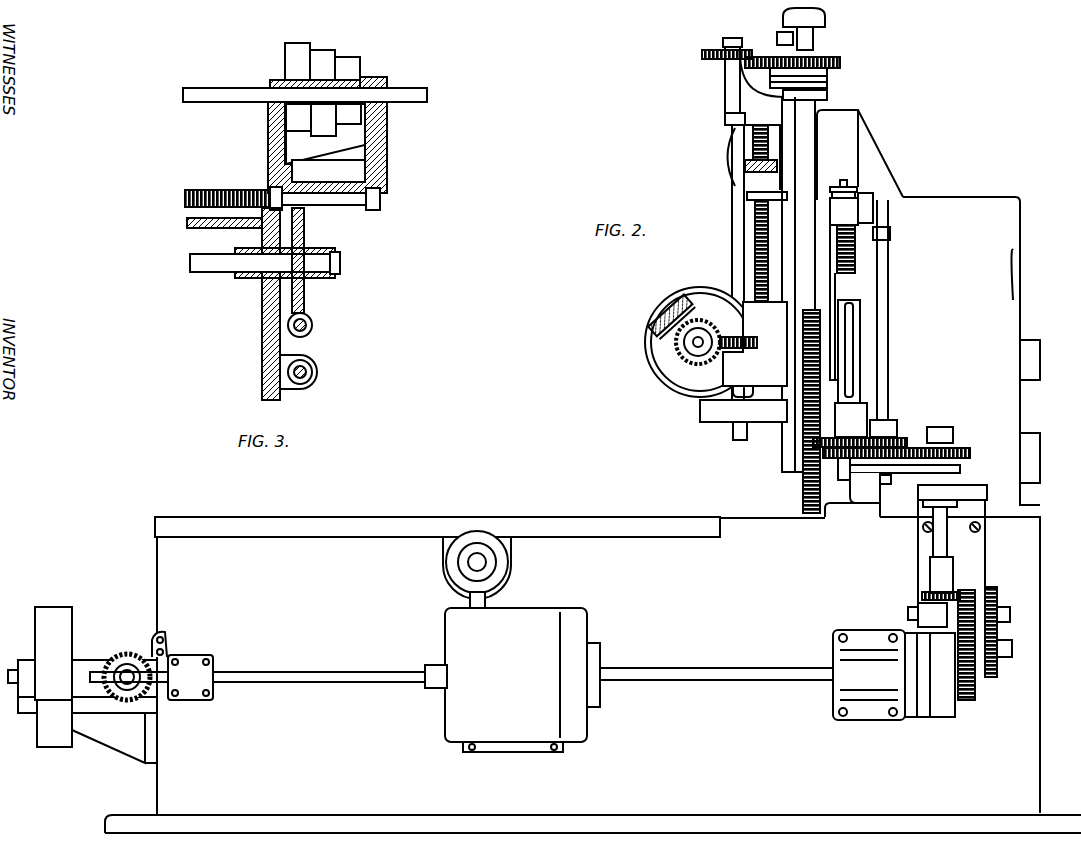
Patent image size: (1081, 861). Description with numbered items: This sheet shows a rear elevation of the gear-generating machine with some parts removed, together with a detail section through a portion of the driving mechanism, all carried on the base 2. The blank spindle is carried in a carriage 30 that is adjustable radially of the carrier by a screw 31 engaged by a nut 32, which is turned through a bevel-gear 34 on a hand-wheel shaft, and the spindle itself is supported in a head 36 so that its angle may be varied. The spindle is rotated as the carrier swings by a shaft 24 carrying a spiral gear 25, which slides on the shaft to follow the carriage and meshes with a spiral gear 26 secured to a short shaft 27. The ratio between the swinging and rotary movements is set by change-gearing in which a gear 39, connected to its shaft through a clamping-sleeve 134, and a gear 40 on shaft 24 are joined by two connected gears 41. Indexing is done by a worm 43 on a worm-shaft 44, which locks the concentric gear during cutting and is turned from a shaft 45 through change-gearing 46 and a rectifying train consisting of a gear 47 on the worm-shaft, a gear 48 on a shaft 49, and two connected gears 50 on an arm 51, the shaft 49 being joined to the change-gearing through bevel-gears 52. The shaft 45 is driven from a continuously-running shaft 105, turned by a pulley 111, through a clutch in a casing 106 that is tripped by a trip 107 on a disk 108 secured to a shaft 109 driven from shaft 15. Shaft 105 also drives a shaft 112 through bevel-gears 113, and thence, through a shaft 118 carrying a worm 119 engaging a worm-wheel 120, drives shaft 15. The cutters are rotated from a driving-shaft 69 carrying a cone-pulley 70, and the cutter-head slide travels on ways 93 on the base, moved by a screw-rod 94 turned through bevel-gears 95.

In FIG. 3, the base 2 is at (265, 361).
In FIG. 2, the base 2 is at (1040, 741).
In FIG. 3, the shaft 15 is at (213, 268).
In FIG. 2, the second shaft 24 is at (735, 258).
In FIG. 2, the spiral gear 25 is at (746, 341).
In FIG. 2, the spiral gear 26 is at (688, 355).
In FIG. 2, the short shaft 27 is at (660, 332).
In FIG. 2, the carriage 30 is at (768, 422).
In FIG. 2, the screw 31 is at (755, 217).
In FIG. 2, the nut 32 is at (747, 196).
In FIG. 2, the bevel-gear 34 is at (770, 163).
In FIG. 2, the head 36 is at (688, 382).
In FIG. 2, the gear 39 is at (841, 64).
In FIG. 2, the gear 40 is at (702, 54).
In FIG. 2, the connected gears 41 is at (742, 55).
In FIG. 2, the worm 43 is at (850, 252).
In FIG. 2, the worm-shaft 44 is at (845, 396).
In FIG. 2, the shaft 45 is at (742, 675).
In FIG. 2, the change-gearing 46 is at (996, 624).
In FIG. 2, the gear 47 is at (822, 442).
In FIG. 2, the gear 48 is at (953, 455).
In FIG. 2, the shaft 49 is at (940, 540).
In FIG. 2, the connected gears 50 is at (900, 447).
In FIG. 2, the arm 51 is at (908, 470).
In FIG. 2, the bevel-gears 52 is at (957, 601).
In FIG. 3, the driving-shaft 69 is at (216, 92).
In FIG. 3, the cone-pulley 70 is at (355, 58).
In FIG. 2, the ways 93 is at (445, 521).
In FIG. 3, the screw-rod 94 is at (215, 193).
In FIG. 3, the bevel-gears 95 is at (326, 212).
In FIG. 2, the continuously-running shaft 105 is at (345, 683).
In FIG. 2, the casing 106 is at (465, 714).
In FIG. 2, the trip 107 is at (490, 596).
In FIG. 2, the disk 108 is at (490, 562).
In FIG. 2, the shaft 109 is at (445, 561).
In FIG. 2, the pulley 111 is at (50, 622).
In FIG. 3, the shaft 112 is at (312, 372).
In FIG. 2, the bevel-gears 113 is at (140, 658).
In FIG. 3, the shaft 118 is at (306, 334).
In FIG. 3, the worm 119 is at (312, 324).
In FIG. 3, the worm-wheel 120 is at (306, 300).
In FIG. 2, the clamping-sleeve 134 is at (823, 28).